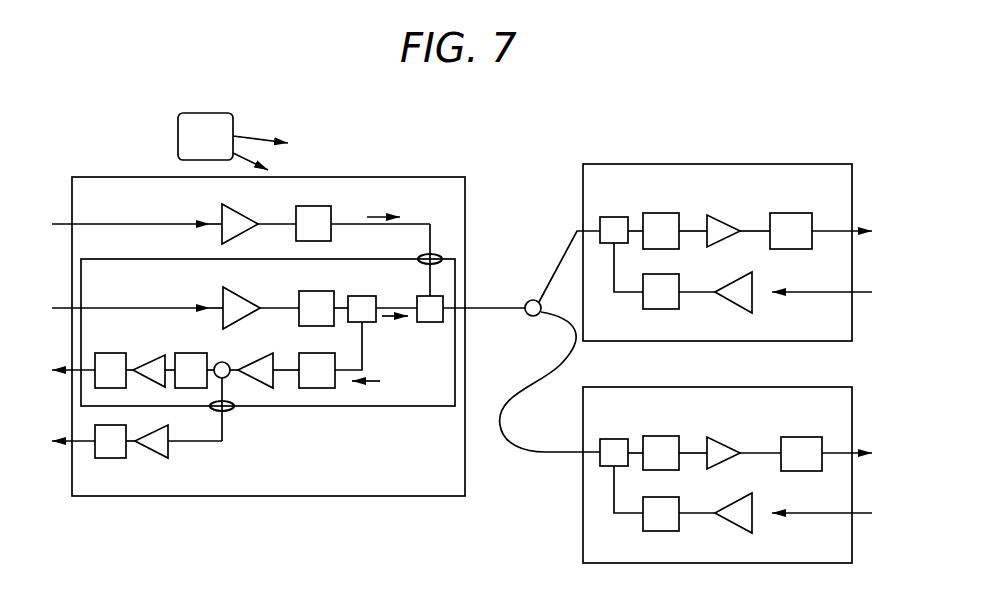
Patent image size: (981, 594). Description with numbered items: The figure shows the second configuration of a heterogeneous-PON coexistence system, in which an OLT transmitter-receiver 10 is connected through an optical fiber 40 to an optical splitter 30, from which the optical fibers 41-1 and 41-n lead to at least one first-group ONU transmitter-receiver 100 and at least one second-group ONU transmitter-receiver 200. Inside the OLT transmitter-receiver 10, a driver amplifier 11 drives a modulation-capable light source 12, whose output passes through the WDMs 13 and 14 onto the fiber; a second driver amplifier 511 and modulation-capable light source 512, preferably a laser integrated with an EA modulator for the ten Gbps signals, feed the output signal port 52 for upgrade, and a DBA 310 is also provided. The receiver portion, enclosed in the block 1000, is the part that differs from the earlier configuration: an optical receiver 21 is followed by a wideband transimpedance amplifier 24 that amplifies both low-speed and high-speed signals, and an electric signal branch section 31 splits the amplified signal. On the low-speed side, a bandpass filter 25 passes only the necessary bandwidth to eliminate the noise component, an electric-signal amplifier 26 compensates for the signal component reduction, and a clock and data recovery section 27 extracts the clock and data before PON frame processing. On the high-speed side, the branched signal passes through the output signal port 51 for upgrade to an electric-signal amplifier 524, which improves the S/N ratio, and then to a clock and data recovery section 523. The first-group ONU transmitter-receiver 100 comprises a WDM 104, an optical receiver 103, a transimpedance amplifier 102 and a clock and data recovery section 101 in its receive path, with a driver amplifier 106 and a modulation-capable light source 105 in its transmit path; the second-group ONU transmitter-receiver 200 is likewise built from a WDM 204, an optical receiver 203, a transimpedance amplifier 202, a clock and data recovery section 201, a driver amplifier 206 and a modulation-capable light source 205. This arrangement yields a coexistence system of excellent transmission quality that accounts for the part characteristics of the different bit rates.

The OLT transmitter-receiver 10 is at (356, 177).
The optical transceiver unit 1000 is at (375, 407).
The DBA 310 is at (177, 131).
The driver amplifier 511 is at (222, 212).
The modulation-capable light source 512 is at (296, 208).
The output signal port for upgrade 52 is at (432, 252).
The driver amplifier 11 is at (223, 294).
The modulation-capable light source 12 is at (299, 294).
The WDM 13 is at (348, 298).
The WDM 14 is at (417, 298).
The optical fiber 40 is at (494, 308).
The optical splitter 30 is at (529, 301).
The optical fiber 41-1 is at (563, 252).
The optical fiber 41-n is at (522, 448).
The optical receiver 21 is at (305, 353).
The wideband transimpedance amplifier 24 is at (258, 358).
The electric signal branch section 31 is at (228, 376).
The bandpass filter 25 is at (185, 353).
The electric-signal amplifier 26 is at (151, 359).
The clock and data recovery section 27 is at (110, 353).
The output signal port for upgrade 51 is at (232, 411).
The clock and data recovery section 523 is at (126, 452).
The electric-signal amplifier 524 is at (168, 452).
The first-group ONU transmitter-receiver 100 is at (722, 164).
The clock and data recovery section 101 is at (790, 213).
The transimpedance amplifier 102 is at (722, 215).
The optical receiver 103 is at (662, 213).
The WDM 104 is at (614, 217).
The modulation-capable light source 105 is at (643, 300).
The driver amplifier 106 is at (736, 304).
The second-group ONU transmitter-receiver 200 is at (721, 387).
The clock and data recovery section 201 is at (803, 437).
The transimpedance amplifier 202 is at (722, 437).
The optical receiver 203 is at (662, 436).
The WDM 204 is at (614, 439).
The modulation-capable light source 205 is at (643, 522).
The driver amplifier 206 is at (736, 524).